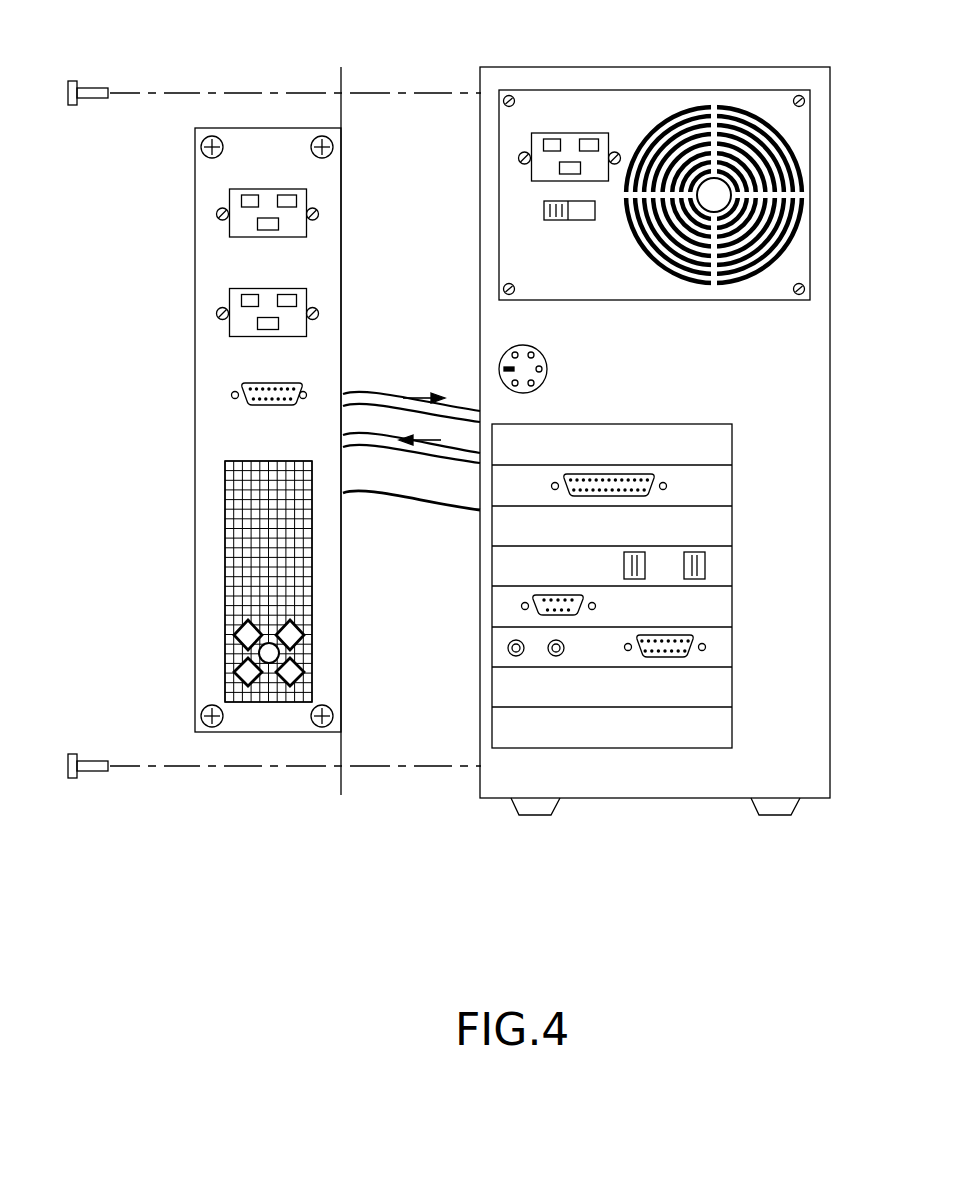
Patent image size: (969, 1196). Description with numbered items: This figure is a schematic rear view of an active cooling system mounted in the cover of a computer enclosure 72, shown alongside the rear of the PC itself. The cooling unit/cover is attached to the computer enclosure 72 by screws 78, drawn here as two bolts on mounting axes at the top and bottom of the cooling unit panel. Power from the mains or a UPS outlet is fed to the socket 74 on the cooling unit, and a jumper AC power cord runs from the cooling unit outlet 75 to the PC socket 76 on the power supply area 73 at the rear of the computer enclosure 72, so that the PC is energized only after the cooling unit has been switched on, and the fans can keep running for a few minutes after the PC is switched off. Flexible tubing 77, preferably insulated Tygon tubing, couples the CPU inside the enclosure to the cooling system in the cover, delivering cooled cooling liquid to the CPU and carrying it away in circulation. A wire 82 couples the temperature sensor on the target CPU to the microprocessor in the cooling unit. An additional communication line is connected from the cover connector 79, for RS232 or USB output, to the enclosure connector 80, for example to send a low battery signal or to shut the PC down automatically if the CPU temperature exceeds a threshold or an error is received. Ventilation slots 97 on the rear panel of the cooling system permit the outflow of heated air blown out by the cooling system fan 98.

The computer enclosure 72 is at (832, 401).
The power supply panel 73 is at (641, 88).
The socket 74 is at (229, 197).
The cooling unit outlet 75 is at (229, 296).
The PC socket 76 is at (531, 142).
The flexible tubing 77 is at (368, 437).
The screws 78 is at (88, 82).
The cover connector 79 is at (232, 386).
The enclosure connector 80 is at (528, 601).
The wire 82 is at (402, 510).
The ventilation slots 97 is at (255, 488).
The cooling system fan 98 is at (255, 650).